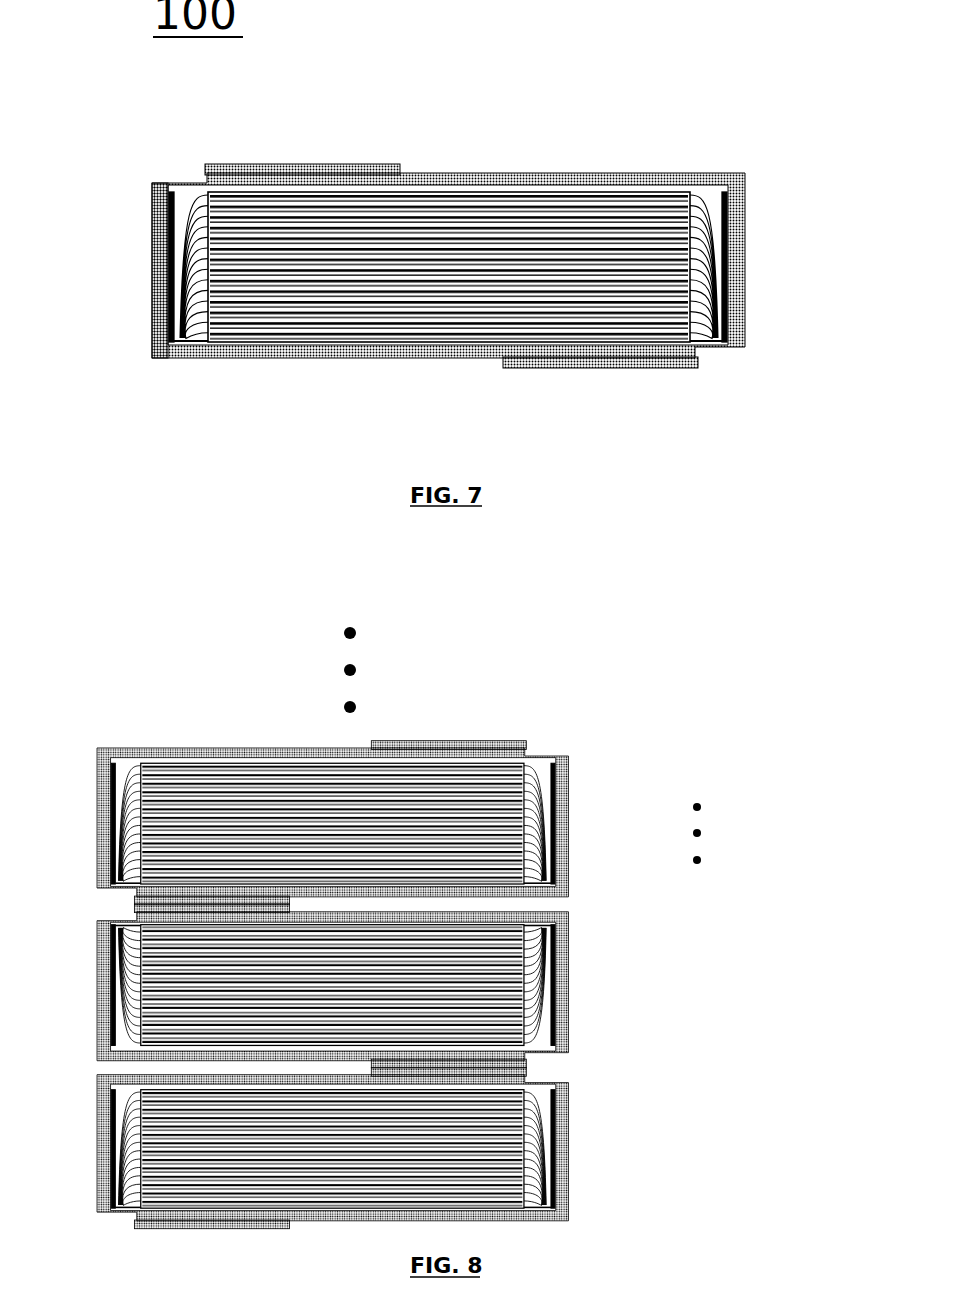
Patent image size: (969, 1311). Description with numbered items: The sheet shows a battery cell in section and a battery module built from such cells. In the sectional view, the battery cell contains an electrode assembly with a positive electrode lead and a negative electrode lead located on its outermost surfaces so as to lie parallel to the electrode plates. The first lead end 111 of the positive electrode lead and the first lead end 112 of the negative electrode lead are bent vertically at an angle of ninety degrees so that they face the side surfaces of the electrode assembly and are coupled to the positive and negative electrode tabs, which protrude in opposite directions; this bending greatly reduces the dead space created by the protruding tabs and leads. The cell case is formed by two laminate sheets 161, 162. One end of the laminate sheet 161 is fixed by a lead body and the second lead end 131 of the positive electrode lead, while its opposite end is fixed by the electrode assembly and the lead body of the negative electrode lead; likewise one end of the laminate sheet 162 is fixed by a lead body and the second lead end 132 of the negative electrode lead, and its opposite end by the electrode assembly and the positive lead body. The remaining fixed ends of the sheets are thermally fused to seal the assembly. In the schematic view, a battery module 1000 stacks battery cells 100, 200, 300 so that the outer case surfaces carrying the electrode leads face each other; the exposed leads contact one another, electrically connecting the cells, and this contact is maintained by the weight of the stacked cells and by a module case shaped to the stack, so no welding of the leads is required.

In FIG. 8, the battery cell 100 is at (411, 1137).
In FIG. 7, the first lead end of the positive electrode lead 111 is at (743, 200).
In FIG. 7, the first lead end of the negative electrode lead 112 is at (162, 308).
In FIG. 7, the second lead end of the positive electrode lead 131 is at (222, 165).
In FIG. 7, the second lead end of the negative electrode lead 132 is at (557, 368).
In FIG. 7, the laminate sheet 161 is at (752, 253).
In FIG. 7, the laminate sheet 162 is at (142, 256).
In FIG. 8, the battery cell 200 is at (575, 965).
In FIG. 8, the battery cell 300 is at (575, 867).
In FIG. 8, the battery module 1000 is at (459, 959).